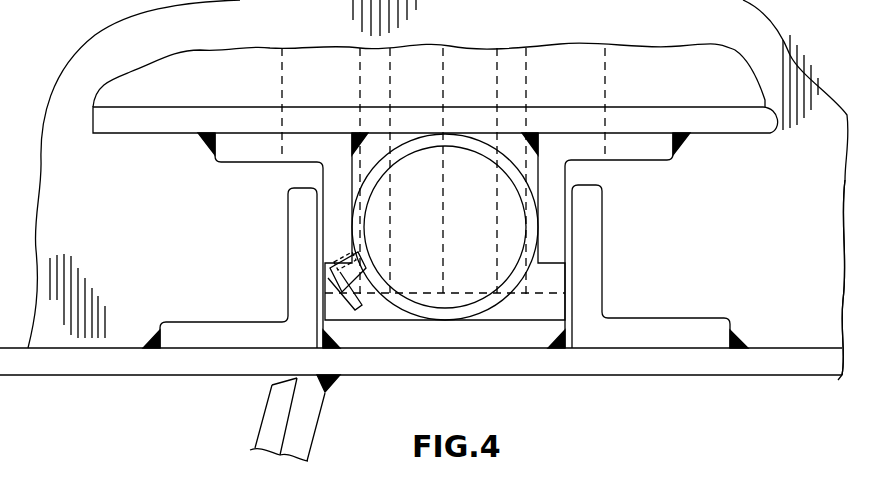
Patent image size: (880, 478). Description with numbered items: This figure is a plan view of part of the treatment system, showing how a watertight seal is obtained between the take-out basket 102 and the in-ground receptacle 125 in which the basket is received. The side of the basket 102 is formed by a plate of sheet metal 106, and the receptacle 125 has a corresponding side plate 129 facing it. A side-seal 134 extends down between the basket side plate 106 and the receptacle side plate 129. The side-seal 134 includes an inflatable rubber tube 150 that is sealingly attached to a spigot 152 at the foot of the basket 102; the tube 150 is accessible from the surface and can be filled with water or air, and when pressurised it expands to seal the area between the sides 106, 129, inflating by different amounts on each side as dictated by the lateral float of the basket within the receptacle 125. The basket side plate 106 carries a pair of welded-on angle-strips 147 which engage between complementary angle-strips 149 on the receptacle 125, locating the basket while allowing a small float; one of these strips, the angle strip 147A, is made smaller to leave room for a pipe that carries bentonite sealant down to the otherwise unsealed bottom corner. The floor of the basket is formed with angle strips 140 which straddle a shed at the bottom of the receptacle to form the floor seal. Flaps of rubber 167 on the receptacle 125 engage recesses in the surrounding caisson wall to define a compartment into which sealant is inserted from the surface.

The take-out basket 102 is at (630, 124).
The side plate of sheet metal 106 is at (157, 115).
The receptacle 125 is at (683, 360).
The side plate of the receptacle 129 is at (810, 355).
The side-seal 134 is at (553, 80).
The angle strips 140 is at (275, 68).
The welded-on angle-strips 147 is at (637, 153).
The smaller angle strip 147A is at (255, 153).
The complementary angle-strips 149 is at (596, 278).
The inflatable rubber tube 150 is at (472, 315).
The spigot 152 is at (458, 160).
The flaps of rubber 167 is at (278, 405).